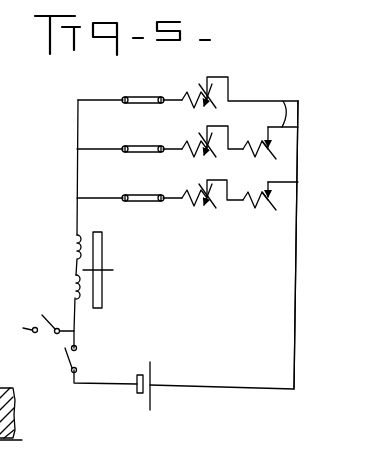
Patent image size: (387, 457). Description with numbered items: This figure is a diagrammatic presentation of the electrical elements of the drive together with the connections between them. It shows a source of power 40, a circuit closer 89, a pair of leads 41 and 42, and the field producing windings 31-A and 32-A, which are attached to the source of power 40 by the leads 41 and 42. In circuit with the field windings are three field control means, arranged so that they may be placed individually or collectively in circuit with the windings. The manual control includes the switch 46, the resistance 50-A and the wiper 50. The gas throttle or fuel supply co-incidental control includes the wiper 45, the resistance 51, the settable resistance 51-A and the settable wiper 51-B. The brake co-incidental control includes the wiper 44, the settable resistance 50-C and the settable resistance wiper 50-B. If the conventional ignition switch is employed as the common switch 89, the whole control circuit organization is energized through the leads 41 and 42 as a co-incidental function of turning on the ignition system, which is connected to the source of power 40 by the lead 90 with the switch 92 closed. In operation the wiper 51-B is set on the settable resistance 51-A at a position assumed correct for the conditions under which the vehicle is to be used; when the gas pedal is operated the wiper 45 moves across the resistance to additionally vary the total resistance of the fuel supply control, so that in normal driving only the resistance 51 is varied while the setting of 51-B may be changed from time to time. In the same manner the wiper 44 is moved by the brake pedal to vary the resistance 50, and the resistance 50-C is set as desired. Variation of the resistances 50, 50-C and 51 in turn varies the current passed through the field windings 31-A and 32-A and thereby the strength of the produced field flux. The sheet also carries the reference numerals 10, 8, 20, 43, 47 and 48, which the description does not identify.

The control circuit 10 is at (262, 0).
The pole piece 8 is at (11, 403).
The permanent magnet 20 is at (103, 253).
The field winding 31-A is at (68, 288).
The field winding 32-A is at (70, 246).
The source of power 40 is at (136, 392).
The lead 41 is at (77, 217).
The lead 42 is at (295, 285).
The variable resistor 43 is at (222, 77).
The wiper 44 is at (208, 123).
The wiper 45 is at (219, 180).
The switch 46 is at (137, 97).
The fuse 47 is at (129, 146).
The fuse 48 is at (137, 195).
The wiper 50 is at (192, 142).
The resistance 50-A is at (192, 91).
The settable resistance wiper 50-B is at (278, 100).
The settable resistance 50-C is at (257, 145).
The resistance 51 is at (193, 190).
The settable resistance 51-A is at (247, 207).
The settable wiper 51-B is at (283, 181).
The circuit closer 89 is at (63, 357).
The lead 90 is at (23, 328).
The switch 92 is at (53, 316).